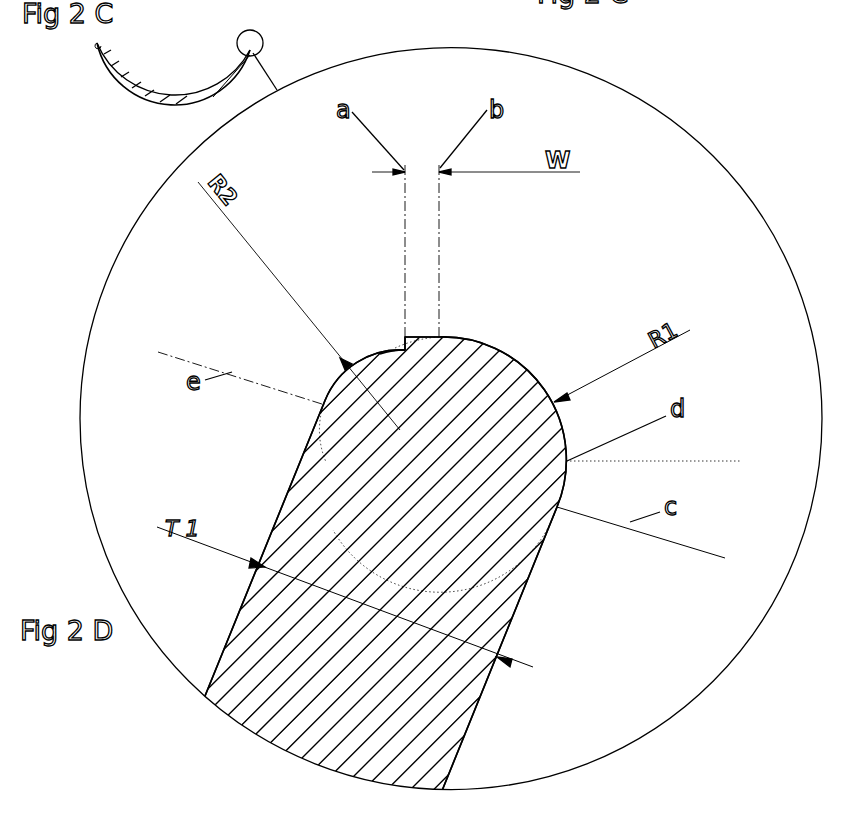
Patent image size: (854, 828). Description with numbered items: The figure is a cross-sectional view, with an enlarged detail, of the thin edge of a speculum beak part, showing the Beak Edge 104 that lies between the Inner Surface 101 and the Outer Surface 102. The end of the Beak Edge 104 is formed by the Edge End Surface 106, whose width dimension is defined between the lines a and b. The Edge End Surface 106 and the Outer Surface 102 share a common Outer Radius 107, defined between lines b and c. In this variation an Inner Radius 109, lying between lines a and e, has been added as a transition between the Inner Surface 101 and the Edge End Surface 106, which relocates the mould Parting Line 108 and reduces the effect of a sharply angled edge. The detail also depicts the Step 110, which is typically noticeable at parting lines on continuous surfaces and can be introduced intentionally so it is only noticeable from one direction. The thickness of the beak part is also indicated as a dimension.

In FIG. 2D, the inner surface 101 is at (237, 635).
In FIG. 2D, the outer surface 102 is at (470, 727).
In FIG. 2C, the beak edge 104 is at (253, 40).
In FIG. 2D, the beak edge 104 is at (407, 483).
In FIG. 2D, the edge end surface 106 is at (405, 337).
In FIG. 2D, the outer radius 107 is at (518, 362).
In FIG. 2D, the parting line 108 is at (405, 337).
In FIG. 2D, the inner radius 109 is at (333, 385).
In FIG. 2D, the step 110 is at (403, 350).